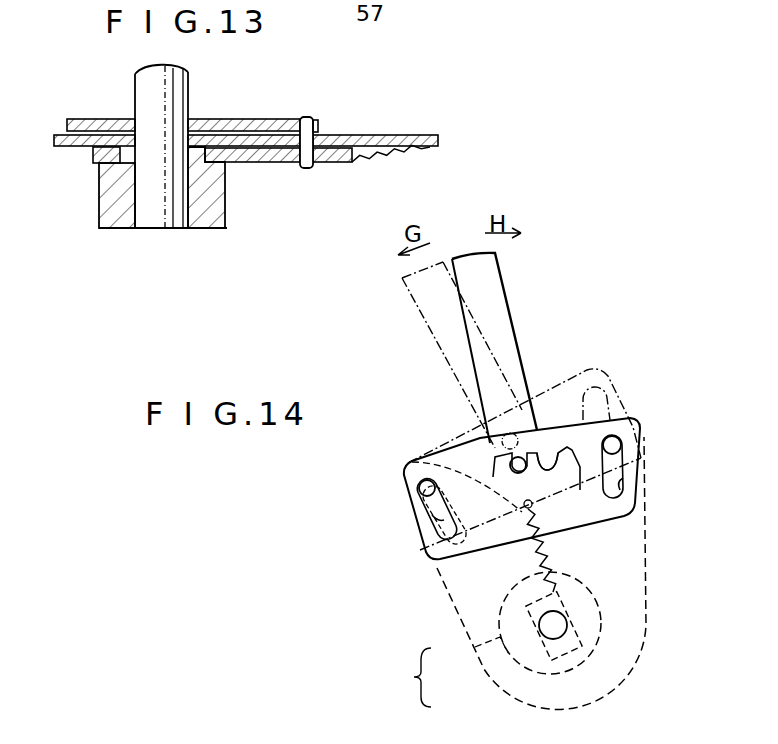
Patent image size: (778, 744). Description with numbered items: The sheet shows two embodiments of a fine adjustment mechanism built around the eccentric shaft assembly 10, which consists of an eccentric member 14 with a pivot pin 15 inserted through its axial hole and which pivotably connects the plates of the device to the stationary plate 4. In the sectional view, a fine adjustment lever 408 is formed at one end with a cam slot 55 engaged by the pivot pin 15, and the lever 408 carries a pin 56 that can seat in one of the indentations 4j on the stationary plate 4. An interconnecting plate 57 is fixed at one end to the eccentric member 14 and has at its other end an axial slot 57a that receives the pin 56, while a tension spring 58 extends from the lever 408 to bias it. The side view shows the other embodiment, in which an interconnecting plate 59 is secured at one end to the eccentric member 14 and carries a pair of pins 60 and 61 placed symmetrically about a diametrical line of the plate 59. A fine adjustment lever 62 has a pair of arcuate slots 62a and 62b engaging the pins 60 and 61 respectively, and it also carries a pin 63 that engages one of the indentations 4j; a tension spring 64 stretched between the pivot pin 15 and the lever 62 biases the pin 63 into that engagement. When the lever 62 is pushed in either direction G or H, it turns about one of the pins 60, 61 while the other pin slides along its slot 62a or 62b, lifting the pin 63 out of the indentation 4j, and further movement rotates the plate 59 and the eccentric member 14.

In FIG. 13, the stationary plate 4 is at (232, 119).
In FIG. 14, the stationary plate 4 is at (468, 448).
In FIG. 13, the indentations 4j is at (319, 126).
In FIG. 14, the indentations 4j is at (550, 450).
In FIG. 13, the eccentric shaft assembly 10 is at (150, 273).
In FIG. 14, the eccentric shaft assembly 10 is at (408, 677).
In FIG. 13, the eccentric member 14 is at (206, 230).
In FIG. 14, the eccentric member 14 is at (473, 653).
In FIG. 13, the pivot pin 15 is at (163, 230).
In FIG. 14, the pivot pin 15 is at (553, 624).
In FIG. 13, the cam slot 55 is at (128, 138).
In FIG. 13, the pin 56 is at (306, 117).
In FIG. 13, the interconnecting plate 57 is at (263, 163).
In FIG. 13, the axial slot 57a is at (322, 163).
In FIG. 13, the tension spring 58 is at (373, 161).
In FIG. 14, the interconnecting plate 59 is at (452, 608).
In FIG. 14, the pin 60 is at (421, 488).
In FIG. 14, the pin 61 is at (614, 445).
In FIG. 14, the fine adjustment lever 62 is at (432, 340).
In FIG. 14, the arcuate slot 62a is at (429, 520).
In FIG. 14, the arcuate slot 62b is at (623, 493).
In FIG. 14, the pin 63 is at (522, 400).
In FIG. 14, the tension spring 64 is at (536, 560).
In FIG. 13, the fine adjustment lever 408 is at (387, 135).